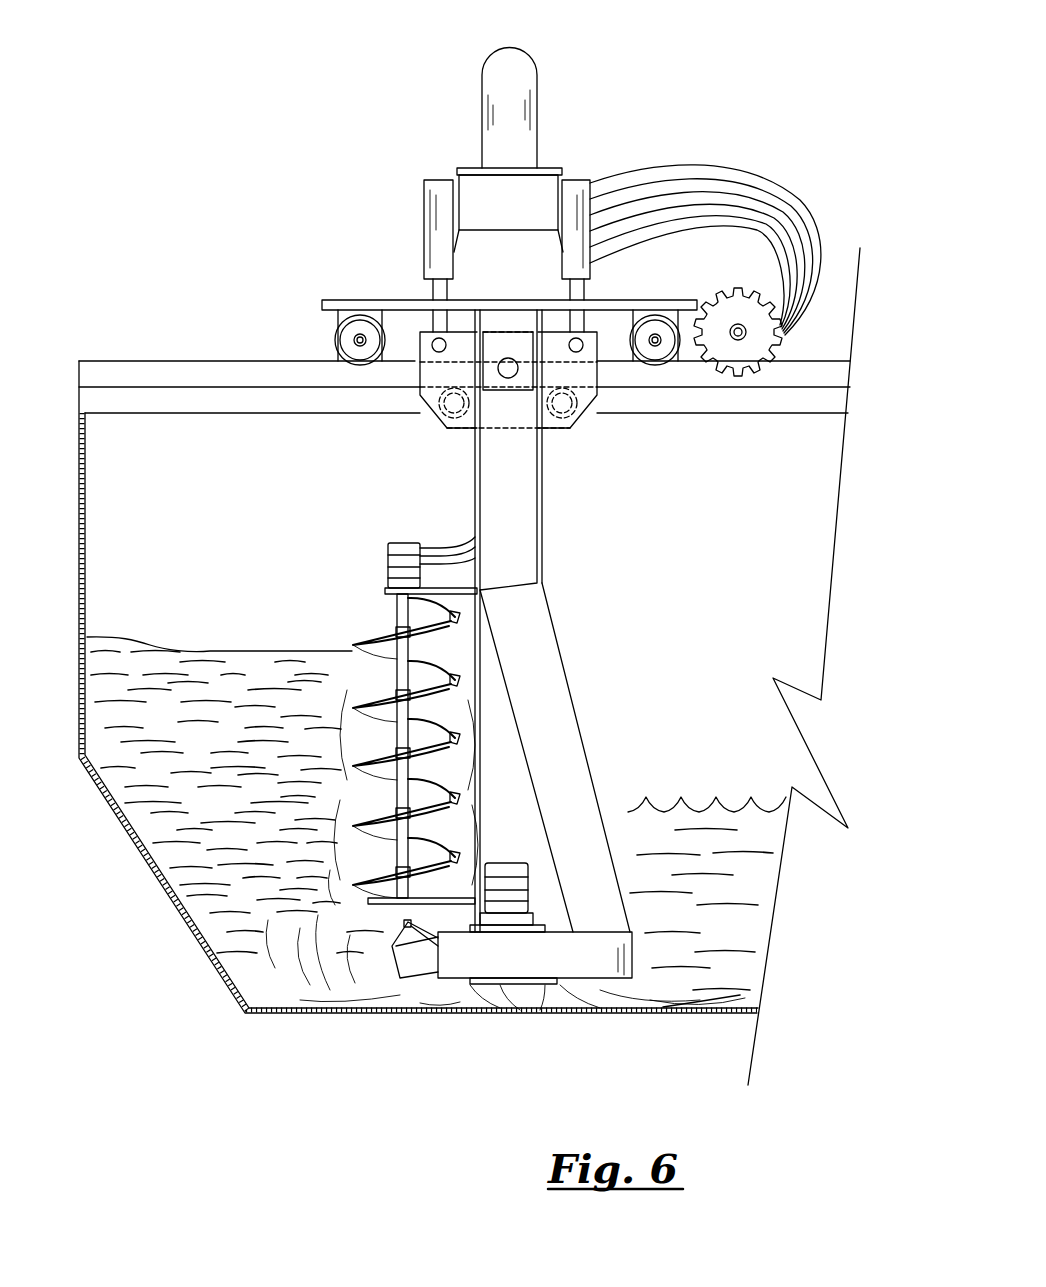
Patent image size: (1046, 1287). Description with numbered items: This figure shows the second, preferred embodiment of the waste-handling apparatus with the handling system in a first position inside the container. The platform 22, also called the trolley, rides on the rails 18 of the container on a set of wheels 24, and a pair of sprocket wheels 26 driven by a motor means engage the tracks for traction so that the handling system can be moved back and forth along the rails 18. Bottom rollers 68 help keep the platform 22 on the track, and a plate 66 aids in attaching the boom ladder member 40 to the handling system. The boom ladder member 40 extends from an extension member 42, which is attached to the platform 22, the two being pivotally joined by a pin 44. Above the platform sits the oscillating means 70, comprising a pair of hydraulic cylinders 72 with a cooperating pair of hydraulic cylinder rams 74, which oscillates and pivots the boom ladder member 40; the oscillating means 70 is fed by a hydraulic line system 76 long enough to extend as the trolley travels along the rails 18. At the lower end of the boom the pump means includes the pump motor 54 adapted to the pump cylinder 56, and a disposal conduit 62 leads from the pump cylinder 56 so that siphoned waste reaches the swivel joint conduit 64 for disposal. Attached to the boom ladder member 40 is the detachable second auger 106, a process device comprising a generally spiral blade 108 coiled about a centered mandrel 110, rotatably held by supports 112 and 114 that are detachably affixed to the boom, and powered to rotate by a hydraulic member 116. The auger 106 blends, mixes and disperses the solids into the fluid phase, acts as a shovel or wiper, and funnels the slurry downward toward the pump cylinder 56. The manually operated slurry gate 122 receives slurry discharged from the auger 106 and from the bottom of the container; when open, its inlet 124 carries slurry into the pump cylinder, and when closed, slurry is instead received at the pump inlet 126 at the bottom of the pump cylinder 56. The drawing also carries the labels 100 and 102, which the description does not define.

The cleaning apparatus 100 is at (178, 192).
The rails 18 is at (832, 366).
The tank interior 102 is at (85, 520).
The platform 22 is at (357, 299).
The wheels 24 is at (662, 352).
The sprocket wheels 26 is at (737, 300).
The hydraulic line system 76 is at (732, 170).
The swivel joint conduit 64 is at (513, 87).
The oscillating means 70 is at (410, 206).
The hydraulic cylinders 72 is at (582, 193).
The hydraulic cylinder rams 74 is at (433, 290).
The extension member 42 is at (445, 427).
The bottom rollers 68 is at (448, 418).
The pin 44 is at (517, 375).
The plate 66 is at (470, 425).
The boom ladder member 40 is at (503, 745).
The disposal conduit 62 is at (566, 745).
The pump motor 54 is at (530, 890).
The pump cylinder 56 is at (590, 962).
The pump inlet 126 is at (510, 982).
The inlet 124 is at (395, 978).
The slurry gate 122 is at (410, 968).
The support 114 is at (372, 904).
The hydraulic member 116 is at (388, 552).
The support 112 is at (393, 614).
The mandrel 110 is at (395, 672).
The second auger 106 is at (350, 762).
The spiral blade 108 is at (346, 724).